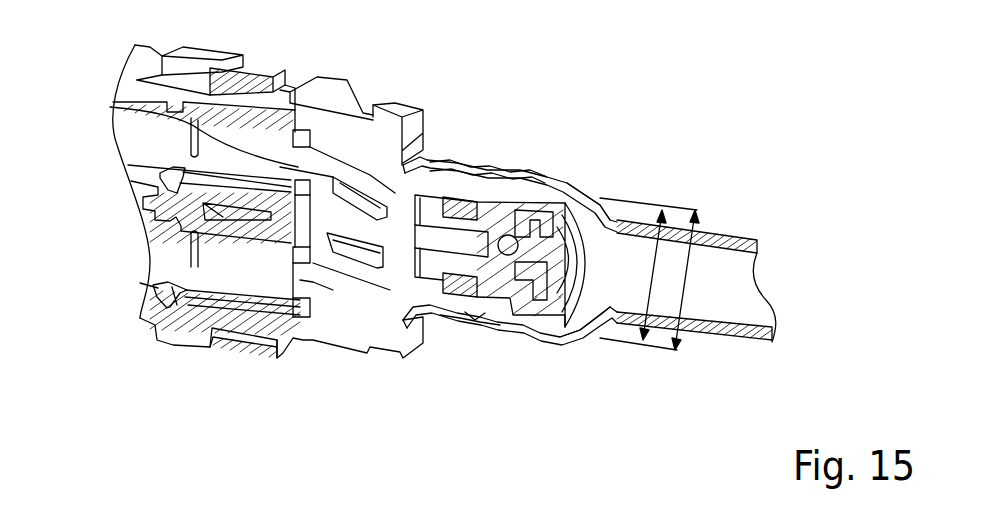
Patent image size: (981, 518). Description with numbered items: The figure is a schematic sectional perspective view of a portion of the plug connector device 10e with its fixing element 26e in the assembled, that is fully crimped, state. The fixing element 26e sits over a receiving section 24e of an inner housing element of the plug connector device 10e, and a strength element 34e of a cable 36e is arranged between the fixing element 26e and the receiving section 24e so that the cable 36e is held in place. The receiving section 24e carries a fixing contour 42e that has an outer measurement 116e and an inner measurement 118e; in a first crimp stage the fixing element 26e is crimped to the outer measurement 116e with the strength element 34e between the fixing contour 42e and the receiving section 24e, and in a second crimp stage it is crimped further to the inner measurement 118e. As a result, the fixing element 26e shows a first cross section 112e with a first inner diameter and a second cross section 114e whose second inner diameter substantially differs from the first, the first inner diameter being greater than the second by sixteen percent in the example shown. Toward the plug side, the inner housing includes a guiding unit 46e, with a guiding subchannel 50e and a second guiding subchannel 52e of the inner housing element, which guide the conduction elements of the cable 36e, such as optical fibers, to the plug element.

The plug connector device 10e is at (553, 142).
The receiving section 24e is at (493, 182).
The fixing element 26e is at (488, 175).
The strength element 34e is at (590, 187).
The cable 36e is at (710, 222).
The fixing contour 42e is at (470, 327).
The guiding unit 46e is at (368, 178).
The guiding subchannel 50e is at (326, 172).
The second guiding subchannel 52e is at (325, 285).
The first cross section 112e is at (687, 283).
The second cross section 114e is at (653, 288).
The outer measurement 116e is at (487, 330).
The inner measurement 118e is at (477, 333).